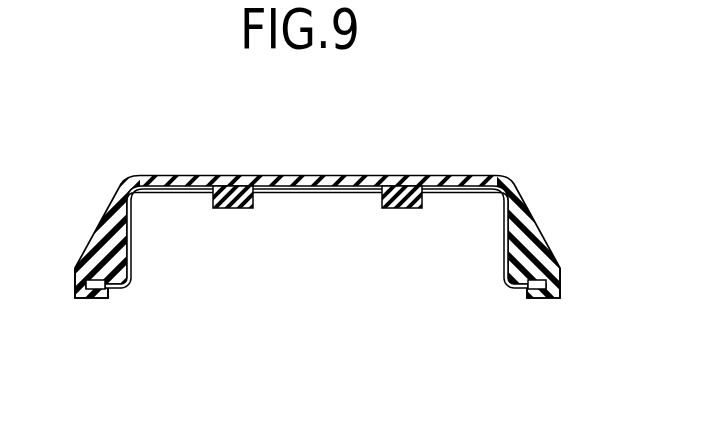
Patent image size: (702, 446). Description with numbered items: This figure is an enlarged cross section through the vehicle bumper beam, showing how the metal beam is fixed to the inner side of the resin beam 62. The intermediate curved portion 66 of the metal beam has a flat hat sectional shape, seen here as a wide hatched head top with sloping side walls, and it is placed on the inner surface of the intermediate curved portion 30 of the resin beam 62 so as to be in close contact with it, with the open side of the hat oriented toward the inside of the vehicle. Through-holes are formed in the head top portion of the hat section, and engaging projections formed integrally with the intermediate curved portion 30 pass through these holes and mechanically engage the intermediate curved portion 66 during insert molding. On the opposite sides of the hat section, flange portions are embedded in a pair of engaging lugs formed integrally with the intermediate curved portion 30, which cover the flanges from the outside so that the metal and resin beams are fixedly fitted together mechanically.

The intermediate curved portion 30 is at (183, 181).
The resin beam 62 is at (351, 208).
The intermediate curved portion 66 is at (317, 195).